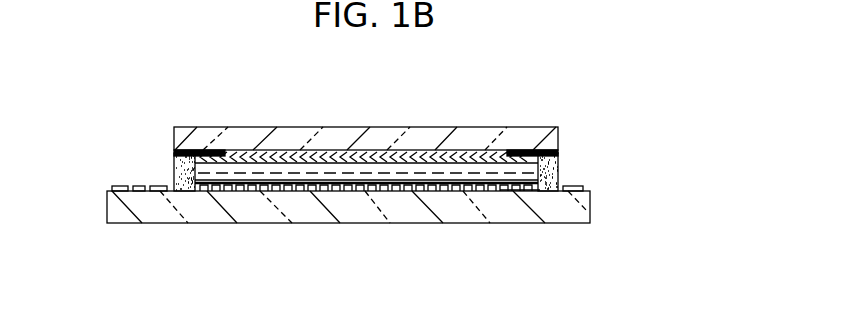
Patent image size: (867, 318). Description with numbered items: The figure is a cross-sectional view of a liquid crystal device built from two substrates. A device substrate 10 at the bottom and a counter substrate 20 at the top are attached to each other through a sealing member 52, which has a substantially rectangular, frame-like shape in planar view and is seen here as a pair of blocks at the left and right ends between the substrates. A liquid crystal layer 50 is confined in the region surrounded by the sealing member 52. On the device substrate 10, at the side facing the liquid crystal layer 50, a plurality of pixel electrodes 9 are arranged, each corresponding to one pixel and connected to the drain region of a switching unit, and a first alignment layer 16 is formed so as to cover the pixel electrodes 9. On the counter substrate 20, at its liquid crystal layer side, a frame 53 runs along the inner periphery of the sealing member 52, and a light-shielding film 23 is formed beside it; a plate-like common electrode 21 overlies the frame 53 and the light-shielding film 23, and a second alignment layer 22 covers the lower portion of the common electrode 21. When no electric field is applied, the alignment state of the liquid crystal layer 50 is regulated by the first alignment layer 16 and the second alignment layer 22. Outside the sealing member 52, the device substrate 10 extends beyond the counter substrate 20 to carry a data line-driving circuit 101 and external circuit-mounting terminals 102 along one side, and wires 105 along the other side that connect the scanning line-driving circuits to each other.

The pixel electrodes 9 is at (262, 188).
The device substrate 10 is at (453, 205).
The first alignment layer 16 is at (523, 192).
The counter substrate 20 is at (361, 142).
The common electrode 21 is at (467, 157).
The second alignment layer 22 is at (257, 160).
The light-shielding film 23 is at (193, 150).
The liquid crystal layer 50 is at (368, 188).
The sealing member 52 is at (183, 191).
The frame 53 is at (206, 150).
The data line-driving circuit 101 is at (157, 186).
The external circuit-mounting terminals 102 is at (116, 186).
The wires 105 is at (572, 191).